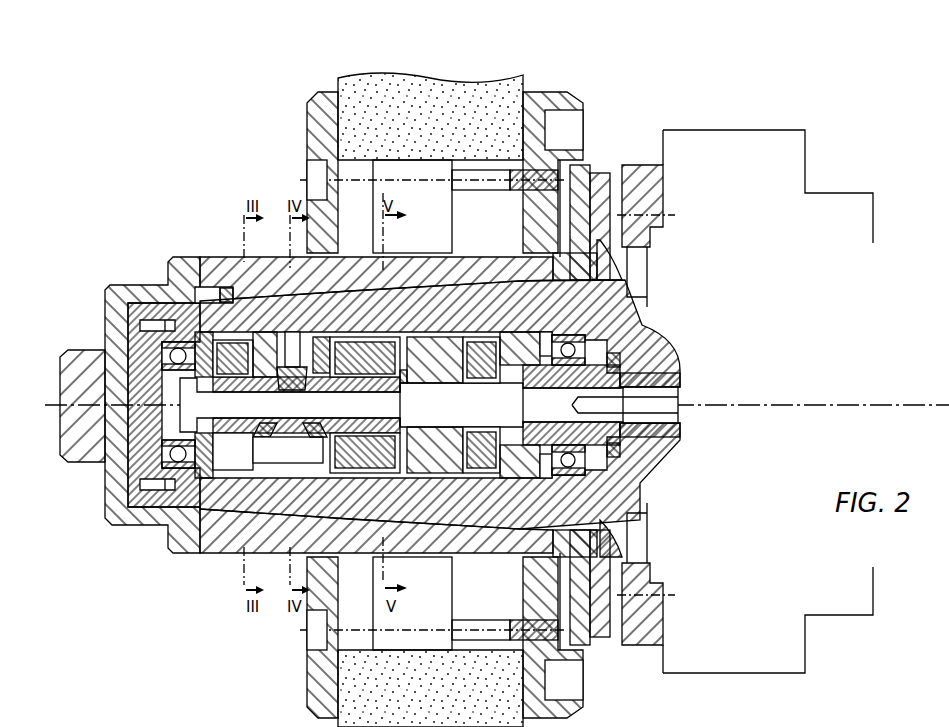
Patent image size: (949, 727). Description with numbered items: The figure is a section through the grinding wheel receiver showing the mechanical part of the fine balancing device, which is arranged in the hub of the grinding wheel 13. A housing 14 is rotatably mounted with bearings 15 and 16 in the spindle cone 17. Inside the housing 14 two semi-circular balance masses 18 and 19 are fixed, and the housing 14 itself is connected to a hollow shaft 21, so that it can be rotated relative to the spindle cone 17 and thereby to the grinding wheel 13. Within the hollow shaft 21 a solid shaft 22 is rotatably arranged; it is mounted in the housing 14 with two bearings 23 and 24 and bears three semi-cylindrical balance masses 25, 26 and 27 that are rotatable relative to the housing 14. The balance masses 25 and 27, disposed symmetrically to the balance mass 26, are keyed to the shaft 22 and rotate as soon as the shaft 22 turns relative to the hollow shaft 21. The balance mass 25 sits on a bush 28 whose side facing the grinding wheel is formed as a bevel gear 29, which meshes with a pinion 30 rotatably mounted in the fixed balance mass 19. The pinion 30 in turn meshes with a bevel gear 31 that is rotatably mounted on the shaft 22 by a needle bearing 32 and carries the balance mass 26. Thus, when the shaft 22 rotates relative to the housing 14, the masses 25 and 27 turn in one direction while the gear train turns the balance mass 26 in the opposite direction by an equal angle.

The grinding wheel 13 is at (510, 88).
The housing 14 is at (222, 478).
The bearing 15 is at (155, 330).
The bearing 16 is at (650, 320).
The spindle cone 17 is at (650, 463).
The balance mass 18 is at (445, 372).
The balance mass 19 is at (322, 374).
The hollow shaft 21 is at (680, 374).
The solid shaft 22 is at (673, 406).
The bearing 23 is at (522, 382).
The bearing 24 is at (147, 367).
The balance mass 25 is at (222, 338).
The balance mass 26 is at (365, 372).
The balance mass 27 is at (490, 372).
The bush 28 is at (247, 375).
The bevel gear 29 is at (263, 432).
The pinion 30 is at (289, 378).
The bevel gear 31 is at (320, 432).
The needle bearing 32 is at (402, 412).